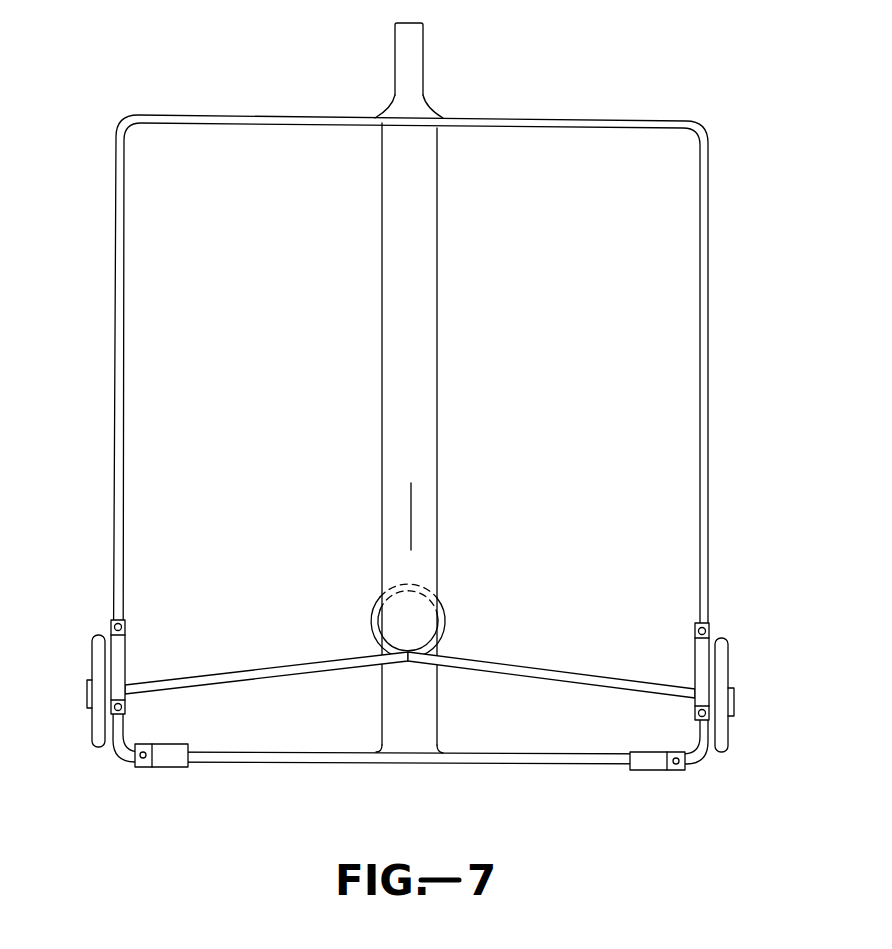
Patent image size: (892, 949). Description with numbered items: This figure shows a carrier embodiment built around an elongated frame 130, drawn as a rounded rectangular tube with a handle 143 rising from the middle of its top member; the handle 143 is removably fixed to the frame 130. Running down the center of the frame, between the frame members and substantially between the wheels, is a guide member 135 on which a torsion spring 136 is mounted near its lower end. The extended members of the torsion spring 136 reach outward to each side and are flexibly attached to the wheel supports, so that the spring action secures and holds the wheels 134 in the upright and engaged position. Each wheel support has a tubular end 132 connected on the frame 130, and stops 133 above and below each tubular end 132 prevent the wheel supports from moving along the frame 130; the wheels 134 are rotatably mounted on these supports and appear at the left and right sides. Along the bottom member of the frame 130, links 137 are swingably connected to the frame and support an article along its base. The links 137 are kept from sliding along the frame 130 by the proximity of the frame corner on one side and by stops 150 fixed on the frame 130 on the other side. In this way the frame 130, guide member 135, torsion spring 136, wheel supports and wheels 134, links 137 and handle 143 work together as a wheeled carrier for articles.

The frame 130 is at (707, 335).
The tubular end 132 is at (125, 648).
The stops 133 is at (112, 623).
The wheels 134 is at (97, 722).
The guide member 135 is at (430, 285).
The torsion spring 136 is at (555, 675).
The links 137 is at (168, 768).
The handle 143 is at (422, 44).
The stops 150 is at (143, 768).